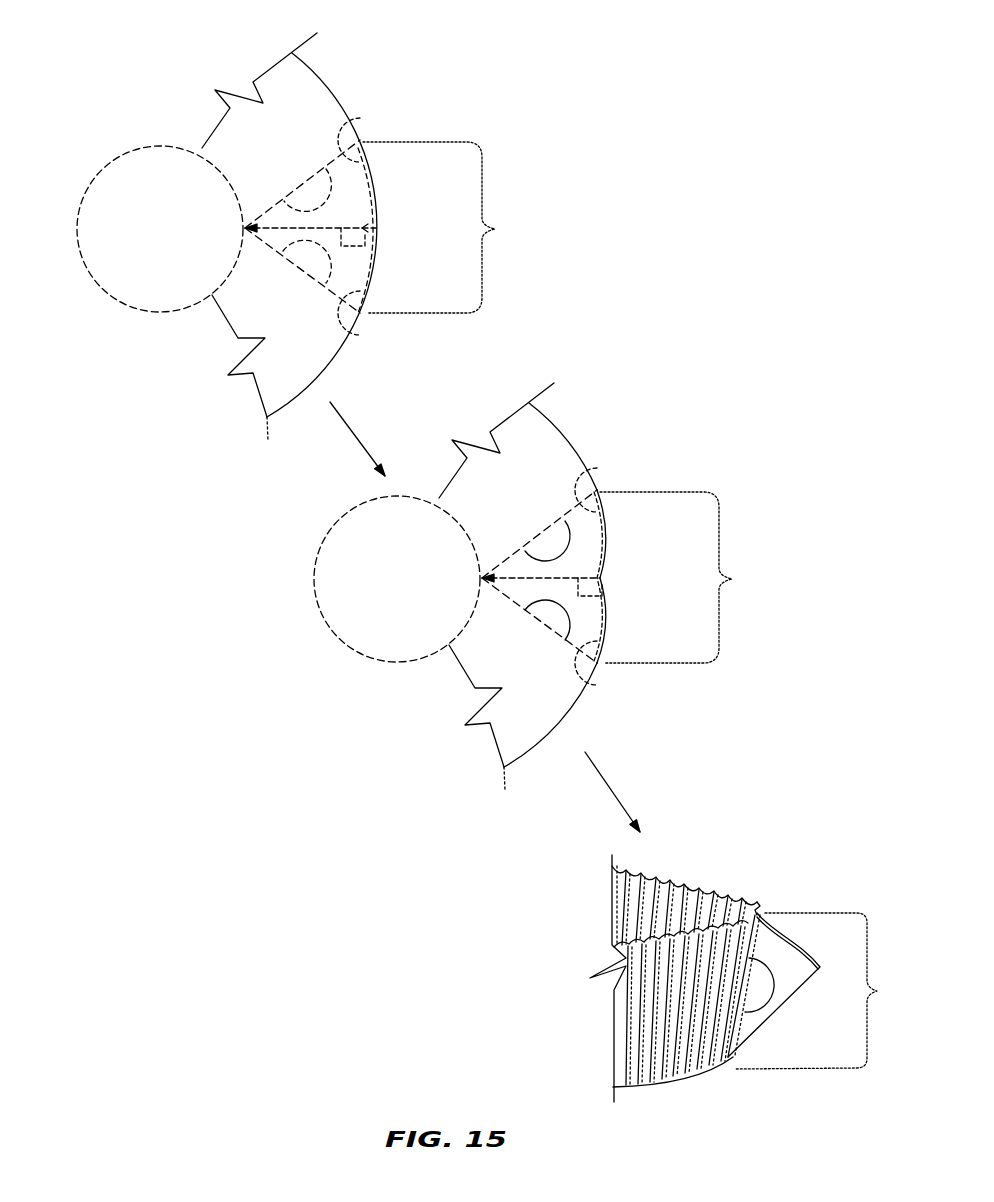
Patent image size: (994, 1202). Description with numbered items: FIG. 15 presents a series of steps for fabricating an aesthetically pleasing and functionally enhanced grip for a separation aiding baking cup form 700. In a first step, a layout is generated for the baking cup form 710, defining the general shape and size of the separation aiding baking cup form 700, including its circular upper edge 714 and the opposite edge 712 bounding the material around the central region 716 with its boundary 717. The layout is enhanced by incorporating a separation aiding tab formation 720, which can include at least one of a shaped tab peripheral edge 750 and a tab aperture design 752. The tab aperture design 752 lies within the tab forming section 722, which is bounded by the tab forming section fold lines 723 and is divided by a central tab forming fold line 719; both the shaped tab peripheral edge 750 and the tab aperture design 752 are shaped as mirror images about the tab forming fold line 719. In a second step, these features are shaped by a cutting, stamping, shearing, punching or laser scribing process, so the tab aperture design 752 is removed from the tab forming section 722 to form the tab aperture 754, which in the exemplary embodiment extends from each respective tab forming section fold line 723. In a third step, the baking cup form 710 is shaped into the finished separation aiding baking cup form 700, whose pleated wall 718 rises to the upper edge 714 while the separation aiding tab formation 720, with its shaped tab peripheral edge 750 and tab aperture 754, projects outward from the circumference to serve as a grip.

The separation aiding baking cup form 700 is at (458, 92).
The baking cup form 710 is at (358, 93).
The outer edge / bottom of pleated media 712 is at (314, 352).
The upper edge 714 is at (331, 92).
The central hub region 716 is at (185, 239).
The hub boundary 717 is at (100, 293).
The pleats 718 is at (690, 915).
The tab forming fold line 719 is at (367, 241).
The separation aiding tab formation 720 is at (643, 605).
The tab forming section 722 is at (348, 185).
The tab forming section fold line 723 is at (352, 112).
The shaped tab peripheral edge 750 is at (370, 195).
The tab aperture design 752 is at (303, 192).
The tab aperture 754 is at (546, 543).